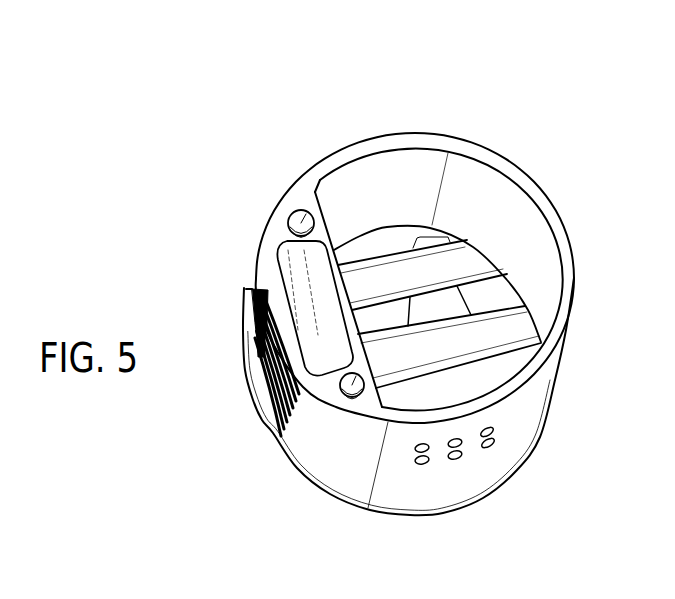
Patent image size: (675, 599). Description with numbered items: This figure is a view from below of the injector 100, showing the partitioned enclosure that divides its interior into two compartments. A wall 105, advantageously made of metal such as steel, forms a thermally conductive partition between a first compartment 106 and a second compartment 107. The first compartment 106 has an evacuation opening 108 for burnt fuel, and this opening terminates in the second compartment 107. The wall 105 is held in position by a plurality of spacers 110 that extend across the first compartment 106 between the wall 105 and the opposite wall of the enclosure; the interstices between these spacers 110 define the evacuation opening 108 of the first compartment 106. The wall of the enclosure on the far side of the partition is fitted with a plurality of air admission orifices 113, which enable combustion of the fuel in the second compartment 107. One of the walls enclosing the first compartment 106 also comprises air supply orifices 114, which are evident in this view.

The housing assembly 100 is at (478, 130).
The wall 105 is at (335, 272).
The compartment 106 is at (472, 383).
The compartment 107 is at (329, 300).
The evacuation opening 108 is at (502, 290).
The spacers 110 is at (403, 277).
The air admission orifices 113 is at (270, 406).
The air supply orifices 114 is at (488, 444).